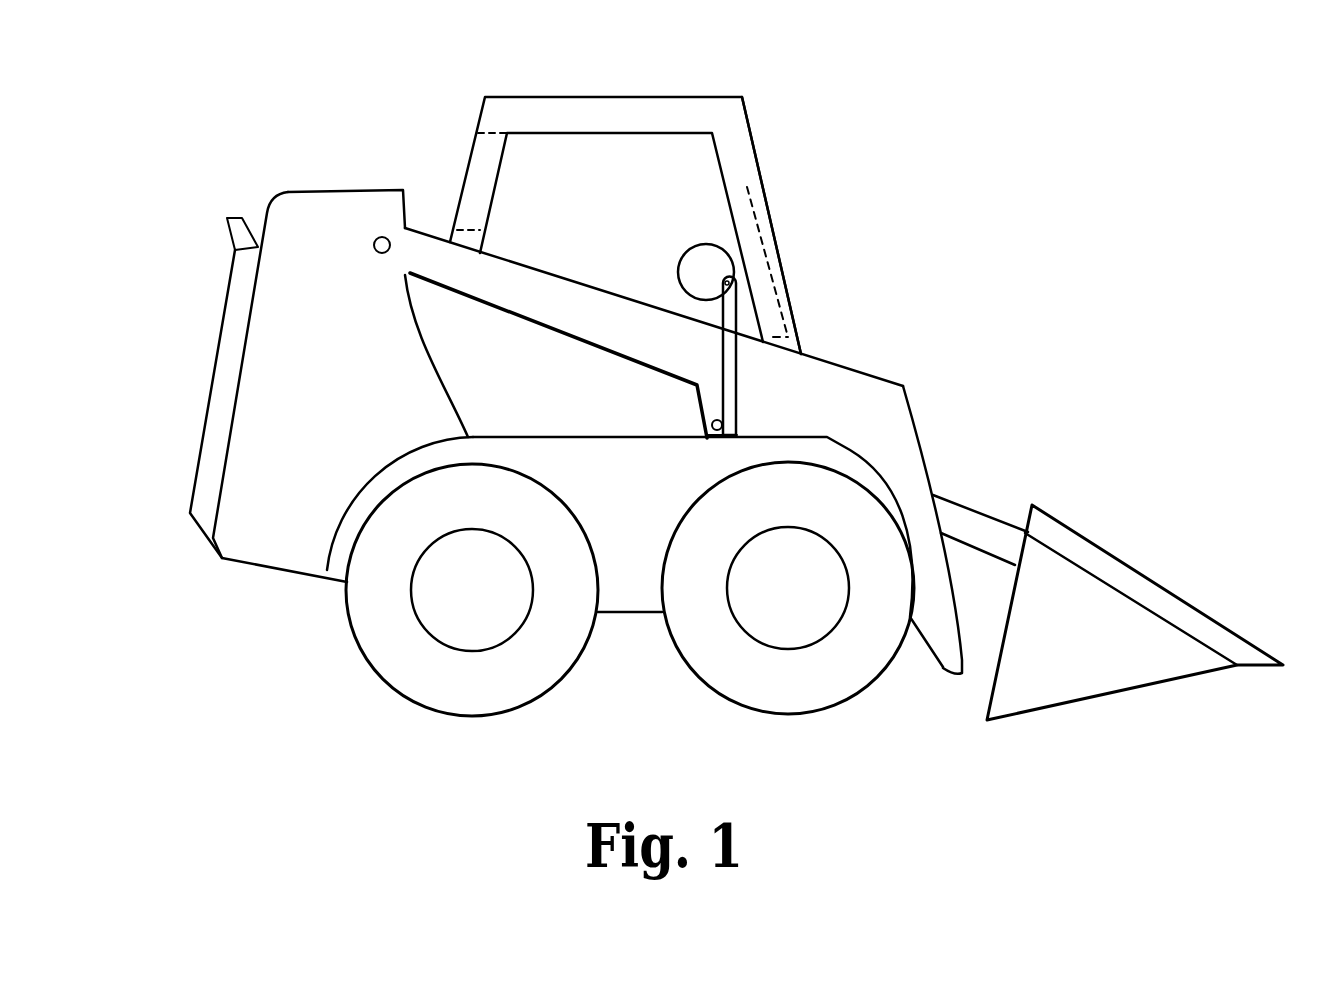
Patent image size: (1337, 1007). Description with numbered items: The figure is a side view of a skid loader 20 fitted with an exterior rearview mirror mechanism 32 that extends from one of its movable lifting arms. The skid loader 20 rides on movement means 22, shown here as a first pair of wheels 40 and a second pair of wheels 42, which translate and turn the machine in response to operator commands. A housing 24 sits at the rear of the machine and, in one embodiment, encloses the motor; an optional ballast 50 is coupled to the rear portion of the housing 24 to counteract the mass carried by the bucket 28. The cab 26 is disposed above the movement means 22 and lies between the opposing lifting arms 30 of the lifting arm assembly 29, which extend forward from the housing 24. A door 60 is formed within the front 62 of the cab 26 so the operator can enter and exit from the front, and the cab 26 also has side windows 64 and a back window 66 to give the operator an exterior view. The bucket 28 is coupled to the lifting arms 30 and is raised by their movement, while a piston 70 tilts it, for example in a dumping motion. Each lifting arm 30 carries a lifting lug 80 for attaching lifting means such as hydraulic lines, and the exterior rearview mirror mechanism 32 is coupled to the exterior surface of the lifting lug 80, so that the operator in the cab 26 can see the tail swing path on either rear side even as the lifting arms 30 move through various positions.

The skid loader 20 is at (925, 110).
The movement means 22 is at (622, 690).
The housing 24 is at (290, 210).
The cab 26 is at (630, 194).
The bucket 28 is at (1240, 645).
The lifting arm assembly 29 is at (997, 449).
The lifting arms 30 is at (958, 514).
The exterior rearview mirror mechanism 32 is at (737, 363).
The first pair of wheels 40 is at (380, 657).
The second pair of wheels 42 is at (787, 700).
The ballast 50 is at (222, 373).
The door 60 is at (755, 235).
The front 62 is at (783, 270).
The side windows 64 is at (597, 165).
The back window 66 is at (476, 178).
The piston 70 is at (978, 520).
The lifting lug 80 is at (700, 415).